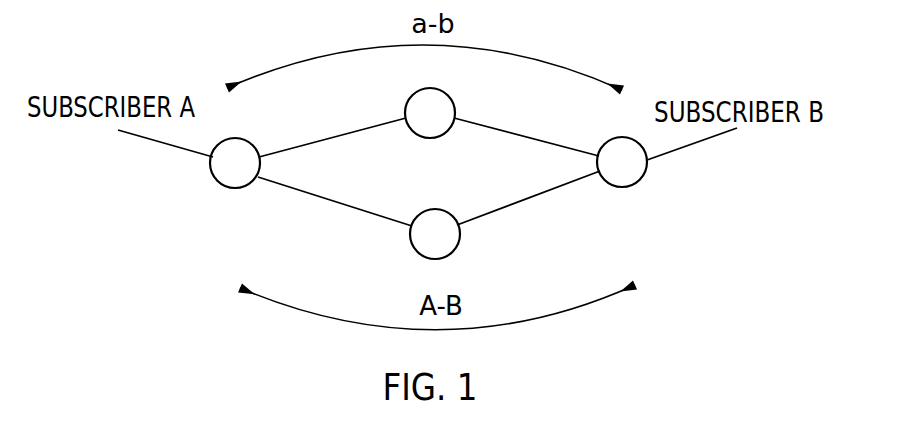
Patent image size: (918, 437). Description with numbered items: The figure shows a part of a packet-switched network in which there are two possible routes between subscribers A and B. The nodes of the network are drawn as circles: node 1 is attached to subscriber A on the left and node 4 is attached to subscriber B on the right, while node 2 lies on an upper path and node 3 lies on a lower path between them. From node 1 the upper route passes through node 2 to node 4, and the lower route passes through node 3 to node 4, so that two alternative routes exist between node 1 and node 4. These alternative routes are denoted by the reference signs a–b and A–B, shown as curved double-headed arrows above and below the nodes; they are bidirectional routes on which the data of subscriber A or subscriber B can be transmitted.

The node 1 is at (235, 163).
The node 2 is at (430, 113).
The node 3 is at (435, 234).
The node 4 is at (622, 162).